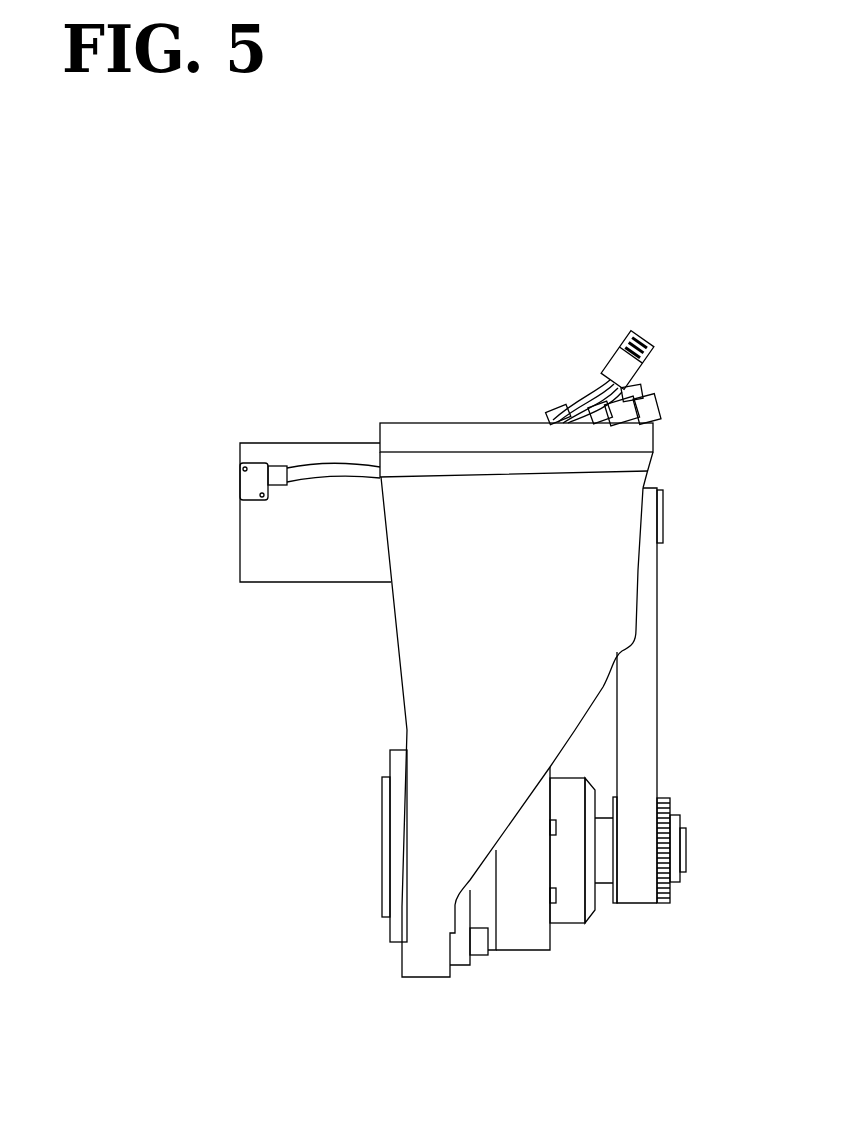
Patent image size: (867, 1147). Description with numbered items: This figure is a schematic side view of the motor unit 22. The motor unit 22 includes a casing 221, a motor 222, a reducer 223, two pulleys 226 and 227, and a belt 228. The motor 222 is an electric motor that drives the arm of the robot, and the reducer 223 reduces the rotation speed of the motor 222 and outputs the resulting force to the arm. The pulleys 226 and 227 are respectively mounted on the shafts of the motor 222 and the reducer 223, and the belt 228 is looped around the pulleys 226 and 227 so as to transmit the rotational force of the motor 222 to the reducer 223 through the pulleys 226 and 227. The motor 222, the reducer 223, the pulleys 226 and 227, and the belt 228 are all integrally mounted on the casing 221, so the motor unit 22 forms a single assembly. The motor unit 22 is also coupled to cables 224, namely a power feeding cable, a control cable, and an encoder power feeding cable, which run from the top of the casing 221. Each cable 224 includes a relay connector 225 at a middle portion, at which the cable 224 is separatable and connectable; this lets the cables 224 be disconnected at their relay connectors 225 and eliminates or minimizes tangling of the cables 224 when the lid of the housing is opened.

The motor unit 22 is at (335, 276).
The casing 221 is at (468, 498).
The motor 222 is at (297, 455).
The reducer 223 is at (518, 925).
The cables 224 is at (552, 416).
The relay connector 225 is at (657, 410).
The pulley 226 is at (664, 512).
The pulley 227 is at (680, 884).
The belt 228 is at (641, 675).